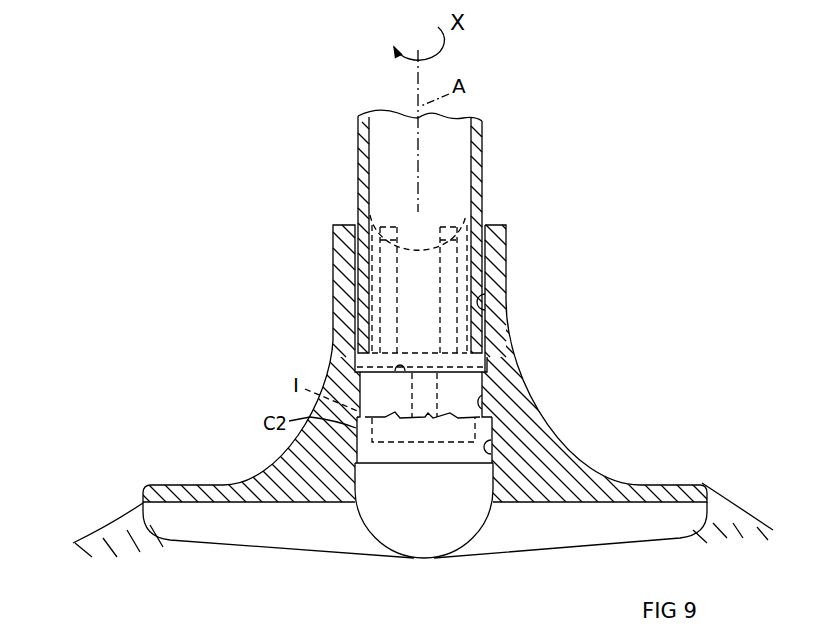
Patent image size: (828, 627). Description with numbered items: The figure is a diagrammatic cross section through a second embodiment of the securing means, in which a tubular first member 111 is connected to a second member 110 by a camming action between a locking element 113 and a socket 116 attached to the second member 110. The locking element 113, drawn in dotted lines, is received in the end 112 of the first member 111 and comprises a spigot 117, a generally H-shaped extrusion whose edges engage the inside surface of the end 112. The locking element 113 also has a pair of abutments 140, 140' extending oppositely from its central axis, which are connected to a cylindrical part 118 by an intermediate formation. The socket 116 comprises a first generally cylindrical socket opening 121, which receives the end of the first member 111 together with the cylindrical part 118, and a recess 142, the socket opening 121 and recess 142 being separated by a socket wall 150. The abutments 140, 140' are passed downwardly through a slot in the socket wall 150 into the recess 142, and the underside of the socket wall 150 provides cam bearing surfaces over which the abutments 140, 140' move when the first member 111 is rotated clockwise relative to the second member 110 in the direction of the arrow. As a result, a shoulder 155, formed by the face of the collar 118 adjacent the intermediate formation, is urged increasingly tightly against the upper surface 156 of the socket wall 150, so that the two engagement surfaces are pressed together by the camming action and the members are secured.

The second member 110 is at (738, 506).
The first member 111 is at (482, 152).
The end of the first member 112 is at (488, 222).
The locking element 113 is at (442, 393).
The socket 116 is at (507, 236).
The spigot 117 is at (455, 222).
The cylindrical part 118 is at (477, 362).
The socket opening 121 is at (492, 307).
The abutment 140 is at (424, 500).
The abutment 140' is at (424, 465).
The recess 142 is at (490, 452).
The socket wall 150 is at (490, 409).
The shoulder 155 is at (352, 380).
The upper surface of the socket wall 156 is at (397, 384).